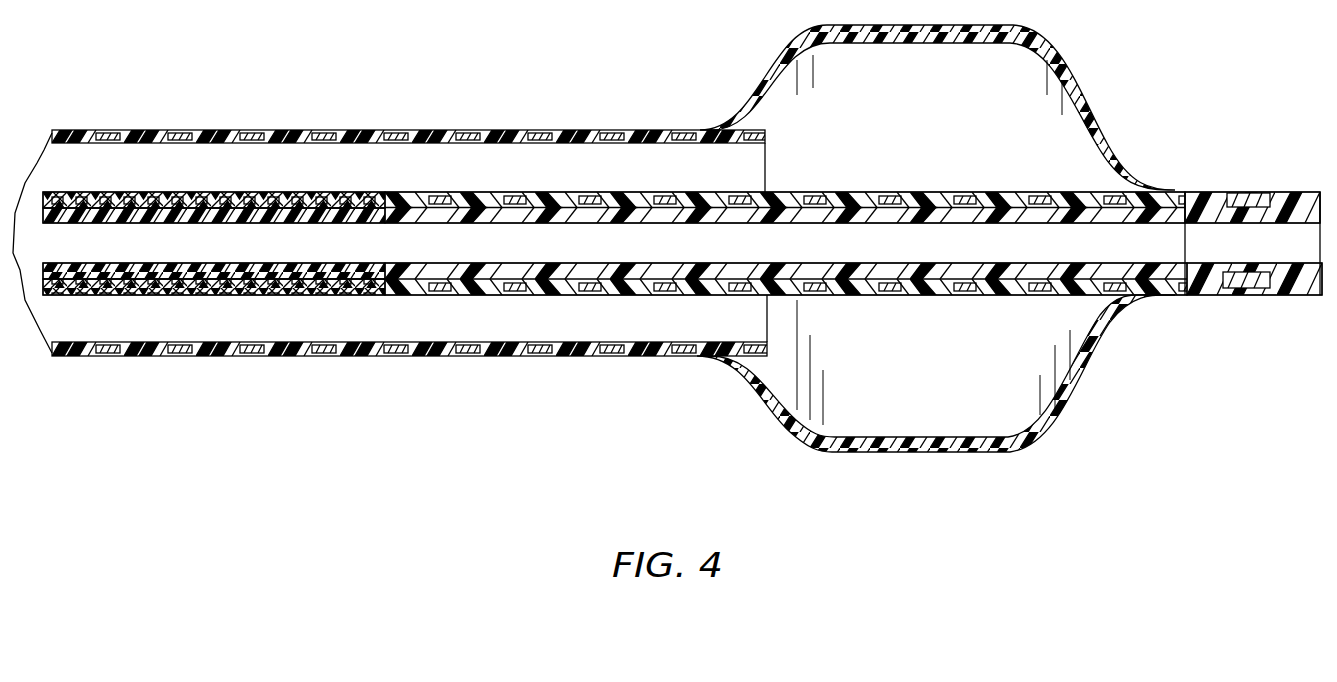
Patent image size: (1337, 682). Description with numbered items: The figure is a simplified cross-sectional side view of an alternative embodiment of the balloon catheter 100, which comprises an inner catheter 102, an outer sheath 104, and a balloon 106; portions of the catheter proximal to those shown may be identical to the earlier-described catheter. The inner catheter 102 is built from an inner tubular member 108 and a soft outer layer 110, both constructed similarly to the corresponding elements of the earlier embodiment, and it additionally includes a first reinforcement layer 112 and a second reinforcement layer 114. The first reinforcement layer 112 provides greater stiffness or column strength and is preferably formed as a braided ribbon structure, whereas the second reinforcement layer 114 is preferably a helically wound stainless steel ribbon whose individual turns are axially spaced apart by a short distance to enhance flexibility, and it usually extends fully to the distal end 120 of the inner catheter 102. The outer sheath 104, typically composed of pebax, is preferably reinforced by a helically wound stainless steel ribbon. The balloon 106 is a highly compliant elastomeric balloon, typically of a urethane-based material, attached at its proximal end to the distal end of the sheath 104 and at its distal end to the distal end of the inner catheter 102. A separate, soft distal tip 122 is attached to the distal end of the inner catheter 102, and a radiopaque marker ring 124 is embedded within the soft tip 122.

The balloon catheter 100 is at (667, 257).
The inner catheter 102 is at (214, 299).
The outer sheath 104 is at (409, 210).
The balloon 106 is at (936, 265).
The inner tubular member 108 is at (214, 232).
The soft outer layer 110 is at (682, 231).
The first reinforcement layer 112 is at (214, 263).
The second reinforcement layer 114 is at (786, 297).
The distal end 120 is at (1220, 203).
The soft distal tip 122 is at (1254, 287).
The marker ring 124 is at (1252, 182).